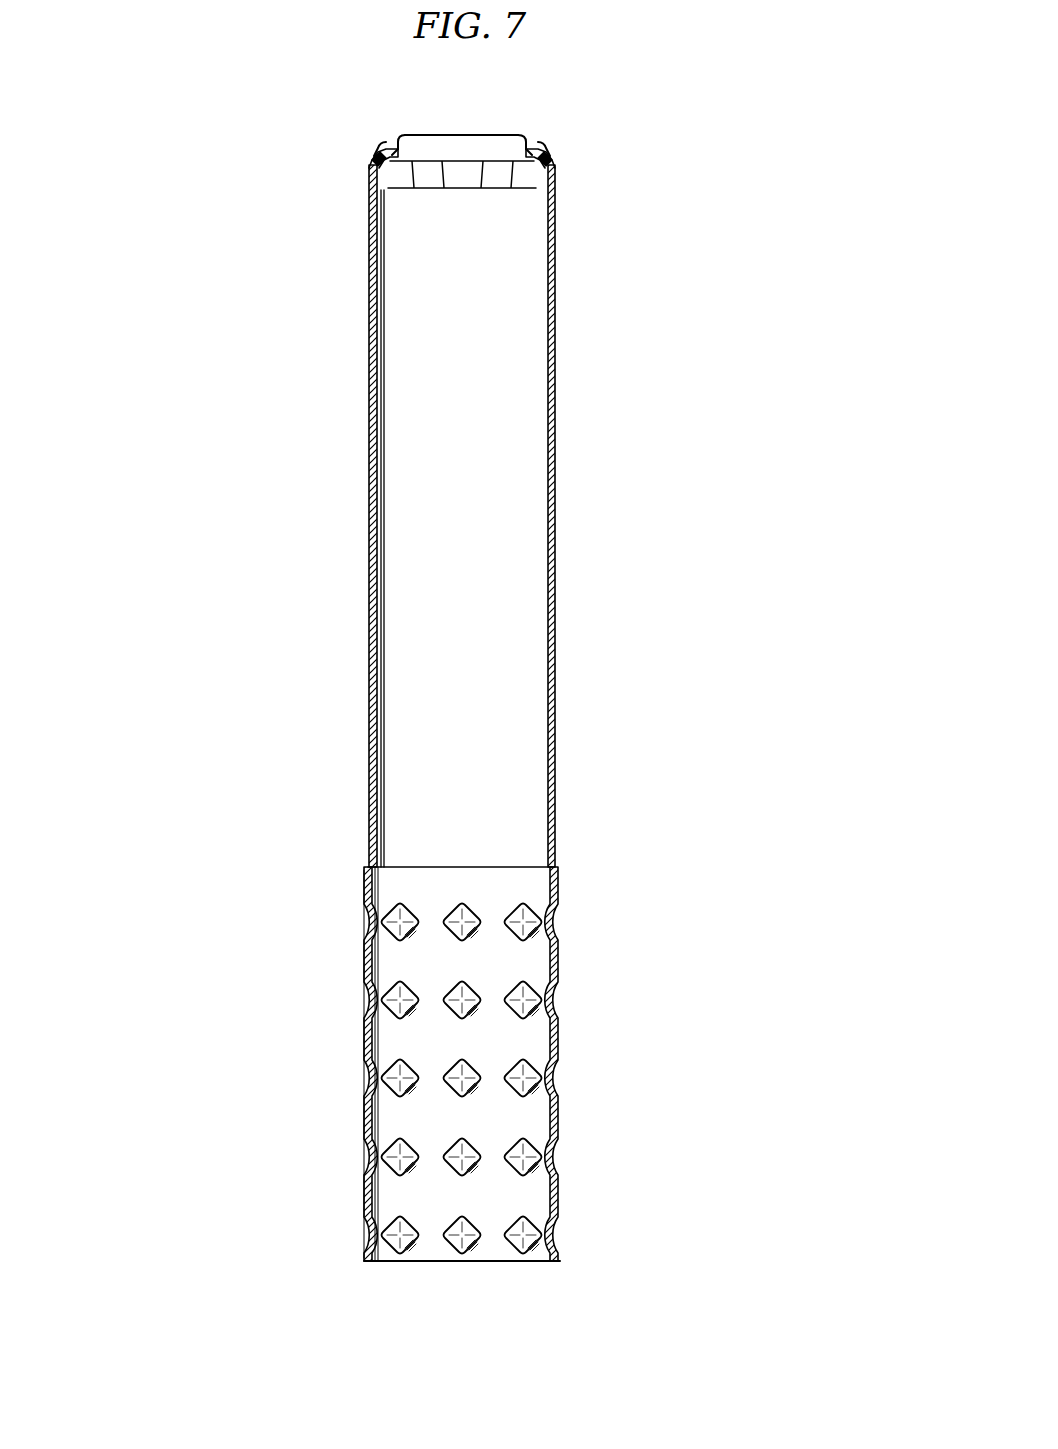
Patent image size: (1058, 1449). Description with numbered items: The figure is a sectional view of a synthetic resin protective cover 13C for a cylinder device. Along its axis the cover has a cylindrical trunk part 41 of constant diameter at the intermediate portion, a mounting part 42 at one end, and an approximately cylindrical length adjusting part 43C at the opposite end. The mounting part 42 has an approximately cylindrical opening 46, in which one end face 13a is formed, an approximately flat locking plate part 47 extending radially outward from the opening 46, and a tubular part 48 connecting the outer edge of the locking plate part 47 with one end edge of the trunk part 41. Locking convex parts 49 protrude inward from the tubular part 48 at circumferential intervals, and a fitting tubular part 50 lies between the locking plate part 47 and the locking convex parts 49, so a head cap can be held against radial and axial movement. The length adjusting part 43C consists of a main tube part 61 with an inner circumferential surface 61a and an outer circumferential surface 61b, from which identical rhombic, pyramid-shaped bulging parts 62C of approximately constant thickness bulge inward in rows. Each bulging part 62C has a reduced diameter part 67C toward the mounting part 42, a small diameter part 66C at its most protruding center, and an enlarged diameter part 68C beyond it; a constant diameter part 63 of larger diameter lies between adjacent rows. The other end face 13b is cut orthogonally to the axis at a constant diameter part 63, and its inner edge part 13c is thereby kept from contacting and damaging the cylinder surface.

The protective cover 13C is at (686, 157).
The end face 13a is at (525, 140).
The end face 13b is at (560, 1262).
The edge part 13c is at (375, 1262).
The trunk part 41 is at (562, 420).
The mounting part 42 is at (560, 148).
The length adjusting part 43C is at (566, 890).
The opening 46 is at (398, 140).
The locking plate part 47 is at (385, 146).
The tubular part 48 is at (560, 177).
The locking convex parts 49 is at (378, 192).
The fitting tubular part 50 is at (392, 152).
The main tube part 61 is at (366, 882).
The inner circumferential surface 61a is at (372, 885).
The outer circumferential surface 61b is at (365, 958).
The bulging parts 62C is at (534, 928).
The constant diameter part 63 is at (550, 1030).
The small diameter part 66C is at (531, 1096).
The reduced diameter part 67C is at (544, 1068).
The enlarged diameter part 68C is at (532, 1083).